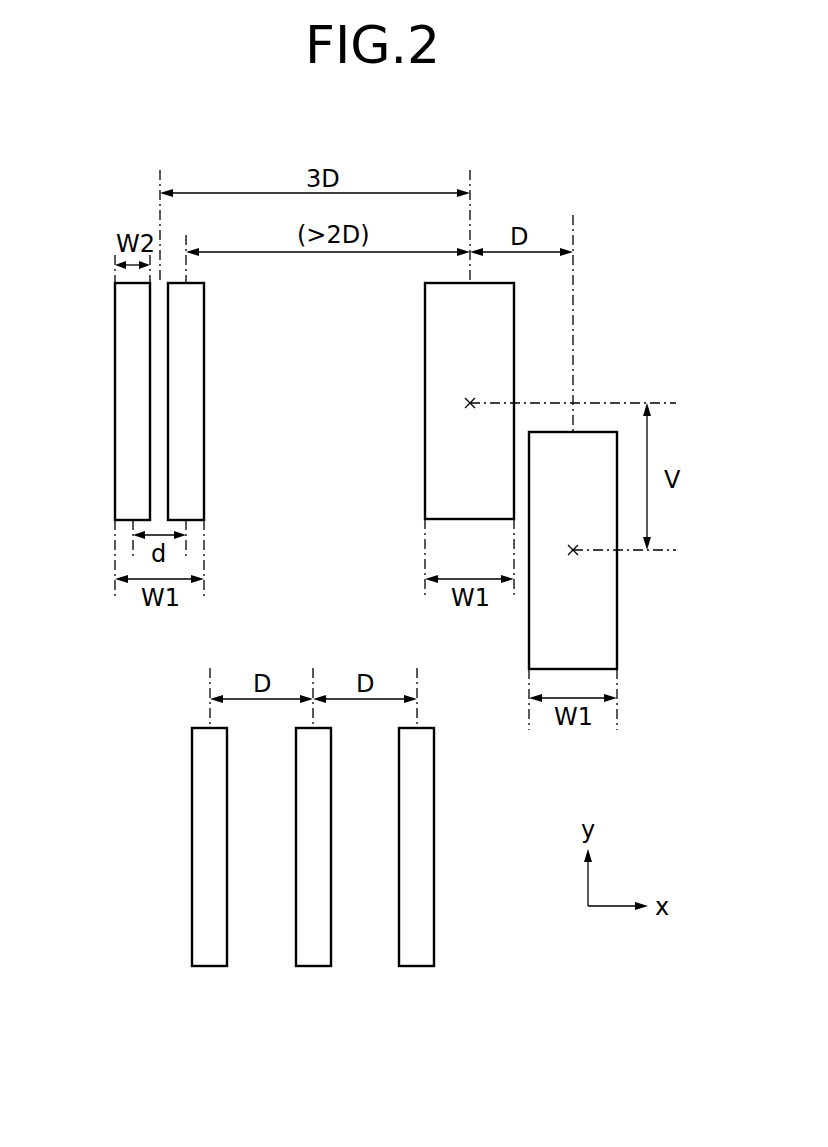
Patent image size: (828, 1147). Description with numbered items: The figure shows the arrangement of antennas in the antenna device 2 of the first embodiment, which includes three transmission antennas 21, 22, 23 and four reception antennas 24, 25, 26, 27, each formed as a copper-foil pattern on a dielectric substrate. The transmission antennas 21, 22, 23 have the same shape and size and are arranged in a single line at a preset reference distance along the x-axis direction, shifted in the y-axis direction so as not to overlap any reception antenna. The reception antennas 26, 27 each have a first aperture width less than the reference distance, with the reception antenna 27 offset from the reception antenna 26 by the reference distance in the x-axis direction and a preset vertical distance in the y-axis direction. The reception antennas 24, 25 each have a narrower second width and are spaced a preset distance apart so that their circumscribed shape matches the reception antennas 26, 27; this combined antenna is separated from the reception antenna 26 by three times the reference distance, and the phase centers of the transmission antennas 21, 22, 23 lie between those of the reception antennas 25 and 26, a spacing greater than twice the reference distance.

The antenna device 2 is at (642, 176).
The transmission antenna 21 is at (208, 759).
The transmission antenna 22 is at (312, 759).
The transmission antenna 23 is at (415, 759).
The reception antenna 24 is at (127, 313).
The reception antenna 25 is at (190, 313).
The reception antenna 26 is at (438, 313).
The reception antenna 27 is at (600, 638).